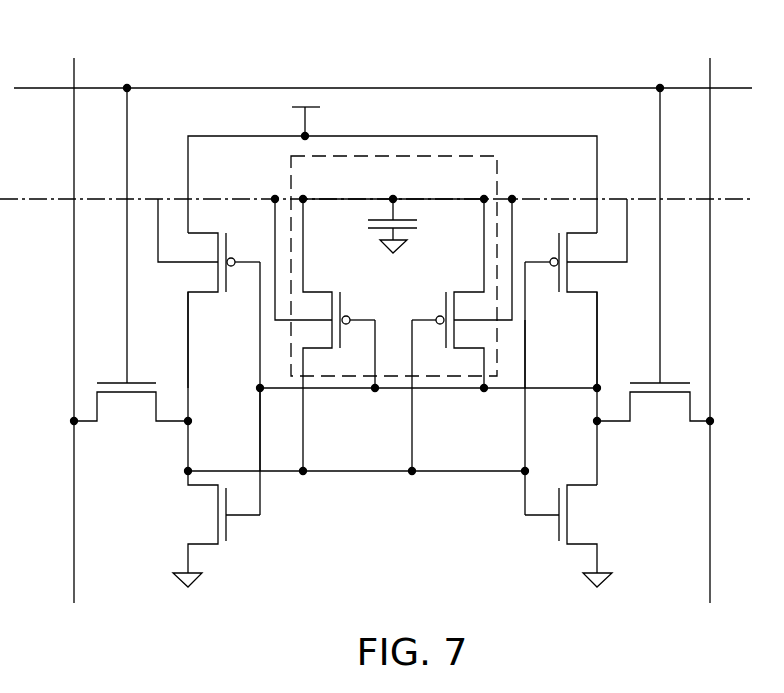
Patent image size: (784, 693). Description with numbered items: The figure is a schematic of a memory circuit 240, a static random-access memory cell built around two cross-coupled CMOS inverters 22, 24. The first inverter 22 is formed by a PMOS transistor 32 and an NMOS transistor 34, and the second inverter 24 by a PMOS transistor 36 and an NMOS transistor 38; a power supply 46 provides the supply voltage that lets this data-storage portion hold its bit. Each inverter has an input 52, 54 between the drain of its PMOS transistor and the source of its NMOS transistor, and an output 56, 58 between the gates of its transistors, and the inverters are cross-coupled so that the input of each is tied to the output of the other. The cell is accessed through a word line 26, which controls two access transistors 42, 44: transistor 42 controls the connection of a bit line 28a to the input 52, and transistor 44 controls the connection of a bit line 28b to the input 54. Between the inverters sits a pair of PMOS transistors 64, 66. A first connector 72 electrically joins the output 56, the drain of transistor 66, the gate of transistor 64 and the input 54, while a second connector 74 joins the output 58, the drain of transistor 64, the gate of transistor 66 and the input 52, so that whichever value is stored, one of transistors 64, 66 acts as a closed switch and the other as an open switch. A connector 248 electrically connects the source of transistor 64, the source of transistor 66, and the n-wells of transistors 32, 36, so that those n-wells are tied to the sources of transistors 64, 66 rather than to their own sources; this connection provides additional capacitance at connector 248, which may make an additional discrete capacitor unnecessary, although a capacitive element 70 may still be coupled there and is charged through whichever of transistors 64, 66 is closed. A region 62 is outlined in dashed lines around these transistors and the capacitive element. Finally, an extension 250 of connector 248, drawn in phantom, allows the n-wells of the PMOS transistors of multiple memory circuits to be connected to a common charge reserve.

The memory circuit 240 is at (643, 50).
The word line 26 is at (568, 88).
The bit line 28a is at (74, 518).
The bit line 28b is at (710, 518).
The extension of connector 250 is at (737, 199).
The connector 248 is at (332, 199).
The power supply 46 is at (315, 107).
The additional circuit region 62 is at (427, 156).
The capacitive element 70 is at (411, 229).
The transistor 32 is at (204, 320).
The transistor 36 is at (550, 320).
The transistor 34 is at (190, 525).
The transistor 38 is at (574, 525).
The access transistor 42 is at (115, 421).
The access transistor 44 is at (644, 421).
The transistor 64 is at (344, 369).
The transistor 66 is at (420, 369).
The input 52 is at (188, 364).
The input 54 is at (597, 368).
The output 56 is at (260, 443).
The output 58 is at (525, 347).
The first connector 72 is at (437, 389).
The second connector 74 is at (346, 472).
The inverter 22 is at (292, 558).
The inverter 24 is at (527, 558).